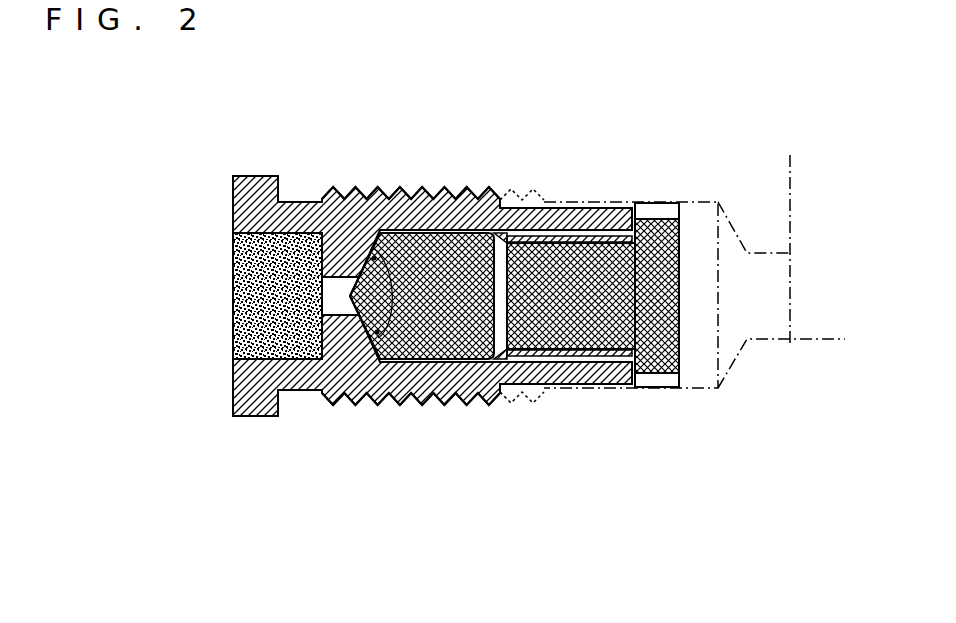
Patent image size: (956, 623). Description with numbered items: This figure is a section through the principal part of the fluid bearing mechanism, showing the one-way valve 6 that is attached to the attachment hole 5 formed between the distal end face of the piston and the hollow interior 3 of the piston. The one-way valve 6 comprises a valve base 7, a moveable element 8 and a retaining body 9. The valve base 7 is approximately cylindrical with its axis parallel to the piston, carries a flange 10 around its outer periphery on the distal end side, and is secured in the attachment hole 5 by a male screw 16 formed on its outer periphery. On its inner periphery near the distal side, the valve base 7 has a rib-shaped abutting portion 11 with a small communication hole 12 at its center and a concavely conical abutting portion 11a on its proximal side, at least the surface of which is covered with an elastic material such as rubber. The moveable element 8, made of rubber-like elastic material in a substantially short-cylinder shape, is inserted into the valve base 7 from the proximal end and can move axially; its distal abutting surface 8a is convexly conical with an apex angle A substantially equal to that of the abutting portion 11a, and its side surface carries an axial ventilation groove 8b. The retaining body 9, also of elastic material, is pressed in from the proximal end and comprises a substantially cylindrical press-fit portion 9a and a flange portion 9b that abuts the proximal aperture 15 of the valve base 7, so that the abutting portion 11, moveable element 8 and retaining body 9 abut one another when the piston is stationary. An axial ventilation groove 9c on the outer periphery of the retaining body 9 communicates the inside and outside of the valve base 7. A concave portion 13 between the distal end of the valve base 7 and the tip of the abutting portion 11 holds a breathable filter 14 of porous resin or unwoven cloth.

The hollow interior 3 is at (830, 312).
The attachment hole 5 is at (556, 198).
The one-way valve 6 is at (200, 241).
The valve base 7 is at (353, 378).
The moveable element 8 is at (452, 332).
The abutting surface 8a is at (367, 229).
The ventilation groove 8b is at (437, 232).
The retaining body 9 is at (622, 351).
The press-fit portion 9a is at (562, 348).
The flange portion 9b is at (666, 375).
The ventilation groove 9c is at (607, 357).
The flange 10 is at (235, 177).
The abutting portion 11 is at (360, 338).
The abutting portion 11a is at (372, 246).
The communication hole 12 is at (345, 287).
The concave portion 13 is at (223, 320).
The breathable filter 14 is at (240, 329).
The proximal aperture 15 is at (617, 208).
The male screw 16 is at (327, 189).
The apex angle A is at (409, 231).